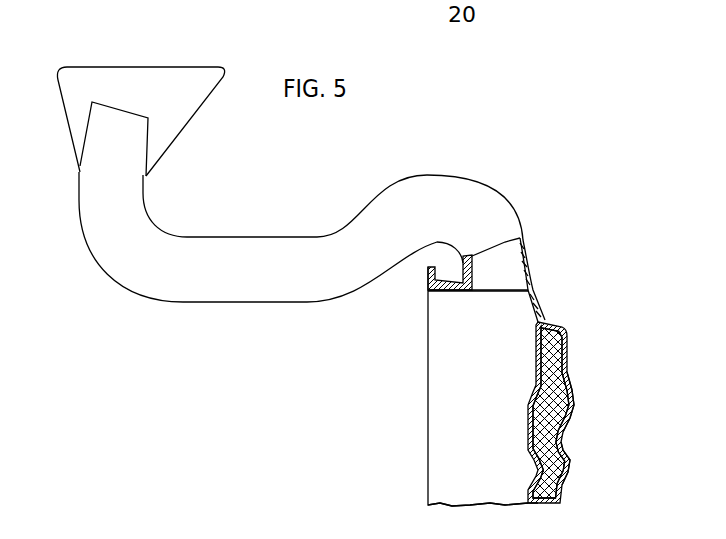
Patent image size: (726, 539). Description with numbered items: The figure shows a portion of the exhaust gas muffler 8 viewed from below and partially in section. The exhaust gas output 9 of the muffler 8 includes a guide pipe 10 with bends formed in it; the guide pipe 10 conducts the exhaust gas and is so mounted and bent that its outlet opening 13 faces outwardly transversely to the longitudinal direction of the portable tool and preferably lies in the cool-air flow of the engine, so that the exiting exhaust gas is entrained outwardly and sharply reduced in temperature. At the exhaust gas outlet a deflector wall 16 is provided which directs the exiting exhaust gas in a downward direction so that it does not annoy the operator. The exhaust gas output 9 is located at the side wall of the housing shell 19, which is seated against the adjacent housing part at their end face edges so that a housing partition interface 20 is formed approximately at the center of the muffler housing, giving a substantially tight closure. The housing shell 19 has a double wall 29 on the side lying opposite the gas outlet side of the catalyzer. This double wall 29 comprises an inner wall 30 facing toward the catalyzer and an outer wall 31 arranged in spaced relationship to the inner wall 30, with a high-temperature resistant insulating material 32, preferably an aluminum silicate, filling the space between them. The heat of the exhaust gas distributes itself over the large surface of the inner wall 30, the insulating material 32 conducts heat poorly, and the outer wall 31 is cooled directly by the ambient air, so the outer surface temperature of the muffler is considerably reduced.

The exhaust gas muffler 8 is at (545, 232).
The exhaust gas output 9 is at (510, 269).
The guide pipe 10 is at (251, 235).
The outlet opening 13 is at (116, 86).
The deflector wall 16 is at (185, 119).
The housing shell 19 is at (428, 507).
The housing partition interface 20 is at (428, 395).
The double wall 29 is at (559, 399).
The inner wall 30 is at (537, 395).
The outer wall 31 is at (563, 380).
The insulating material 32 is at (566, 427).